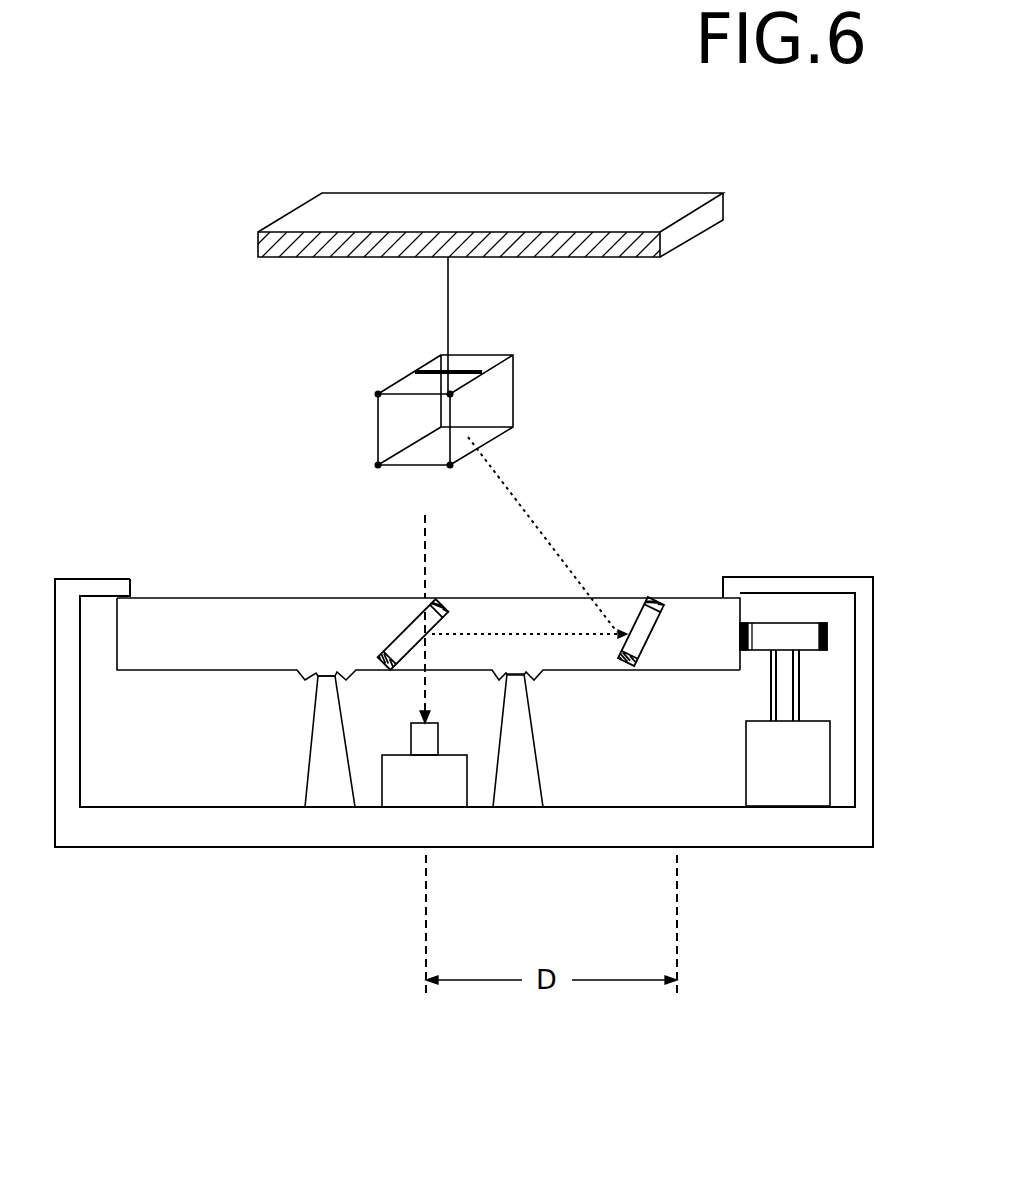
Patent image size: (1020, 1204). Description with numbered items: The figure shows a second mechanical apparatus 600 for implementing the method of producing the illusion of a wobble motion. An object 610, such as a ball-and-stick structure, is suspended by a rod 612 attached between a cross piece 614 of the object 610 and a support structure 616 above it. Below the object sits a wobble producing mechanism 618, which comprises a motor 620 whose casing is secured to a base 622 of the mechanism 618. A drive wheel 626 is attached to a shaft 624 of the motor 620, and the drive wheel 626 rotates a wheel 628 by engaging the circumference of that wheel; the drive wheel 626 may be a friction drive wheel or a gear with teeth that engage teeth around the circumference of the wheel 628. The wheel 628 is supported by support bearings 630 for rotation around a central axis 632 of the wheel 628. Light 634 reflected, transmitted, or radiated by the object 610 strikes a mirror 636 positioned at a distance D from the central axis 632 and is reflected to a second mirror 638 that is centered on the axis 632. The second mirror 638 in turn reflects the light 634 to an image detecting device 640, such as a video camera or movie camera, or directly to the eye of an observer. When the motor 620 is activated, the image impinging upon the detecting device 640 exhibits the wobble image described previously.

The mechanical apparatus 600 is at (472, 106).
The object 610 is at (515, 385).
The rod 612 is at (448, 290).
The cross piece 614 is at (418, 372).
The support structure 616 is at (300, 240).
The wobble producing mechanism 618 is at (853, 562).
The motor 620 is at (775, 768).
The base 622 is at (555, 828).
The shaft 624 is at (778, 672).
The drive wheel 626 is at (772, 638).
The wheel 628 is at (192, 598).
The support bearings 630 is at (322, 720).
The central axis 632 is at (426, 575).
The light 634 is at (578, 567).
The mirror 636 is at (662, 621).
The second mirror 638 is at (414, 626).
The image detecting device 640 is at (437, 790).